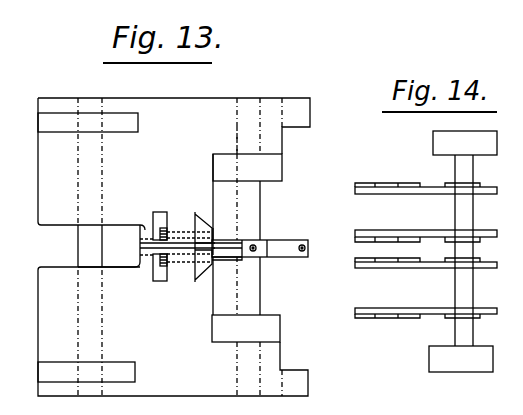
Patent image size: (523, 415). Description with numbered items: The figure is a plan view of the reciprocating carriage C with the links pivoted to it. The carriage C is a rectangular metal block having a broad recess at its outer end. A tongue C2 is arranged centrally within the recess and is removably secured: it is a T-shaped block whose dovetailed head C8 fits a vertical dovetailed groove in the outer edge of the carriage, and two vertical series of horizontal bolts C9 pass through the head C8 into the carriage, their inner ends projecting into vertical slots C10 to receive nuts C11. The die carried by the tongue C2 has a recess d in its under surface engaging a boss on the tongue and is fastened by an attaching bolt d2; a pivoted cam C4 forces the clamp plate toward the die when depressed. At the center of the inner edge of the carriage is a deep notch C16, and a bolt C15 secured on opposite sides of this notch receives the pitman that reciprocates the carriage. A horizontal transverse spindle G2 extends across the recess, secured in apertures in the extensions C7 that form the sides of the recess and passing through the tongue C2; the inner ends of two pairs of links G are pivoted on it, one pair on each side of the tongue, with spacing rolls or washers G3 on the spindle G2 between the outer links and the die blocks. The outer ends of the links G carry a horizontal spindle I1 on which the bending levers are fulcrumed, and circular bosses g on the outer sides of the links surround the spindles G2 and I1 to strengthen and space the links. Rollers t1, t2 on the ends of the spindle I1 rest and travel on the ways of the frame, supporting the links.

In FIG. 13, the reciprocating carriage C is at (174, 247).
In FIG. 13, the tongue C2 is at (293, 242).
In FIG. 13, the cam C4 is at (150, 252).
In FIG. 13, the extensions C7 is at (247, 243).
In FIG. 13, the head of tongue C8 is at (213, 240).
In FIG. 13, the horizontal bolts C9 is at (190, 286).
In FIG. 13, the vertical slots C10 is at (157, 292).
In FIG. 13, the nuts C11 is at (166, 228).
In FIG. 13, the bolt C15 is at (88, 243).
In FIG. 13, the notch C16 is at (73, 246).
In FIG. 13, the recess of die d is at (253, 245).
In FIG. 13, the attaching bolt d2 is at (302, 251).
In FIG. 14, the links G is at (372, 194).
In FIG. 13, the spindle G2 is at (252, 196).
In FIG. 13, the spacing rolls or washers G3 is at (270, 167).
In FIG. 14, the circular bosses g is at (400, 183).
In FIG. 14, the spindle I1 is at (473, 213).
In FIG. 14, the roller t1 is at (465, 143).
In FIG. 14, the roller t2 is at (461, 359).